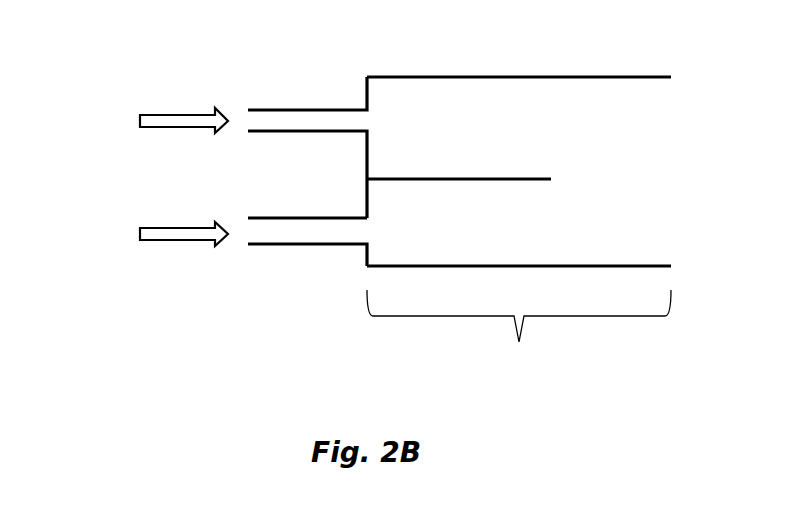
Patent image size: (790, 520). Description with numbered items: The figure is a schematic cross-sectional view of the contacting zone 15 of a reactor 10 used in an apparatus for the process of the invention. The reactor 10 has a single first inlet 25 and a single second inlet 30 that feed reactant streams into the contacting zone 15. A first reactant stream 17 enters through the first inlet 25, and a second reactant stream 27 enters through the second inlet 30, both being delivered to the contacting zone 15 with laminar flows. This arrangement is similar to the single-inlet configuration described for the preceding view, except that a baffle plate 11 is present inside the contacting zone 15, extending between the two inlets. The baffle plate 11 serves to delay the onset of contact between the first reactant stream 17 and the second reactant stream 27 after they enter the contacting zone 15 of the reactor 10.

The reactor 10 is at (627, 137).
The baffle plate 11 is at (467, 187).
The contacting zone 15 is at (519, 341).
The first reactant stream 17 is at (128, 105).
The first inlet 25 is at (263, 92).
The second reactant stream 27 is at (125, 223).
The second inlet 30 is at (329, 251).